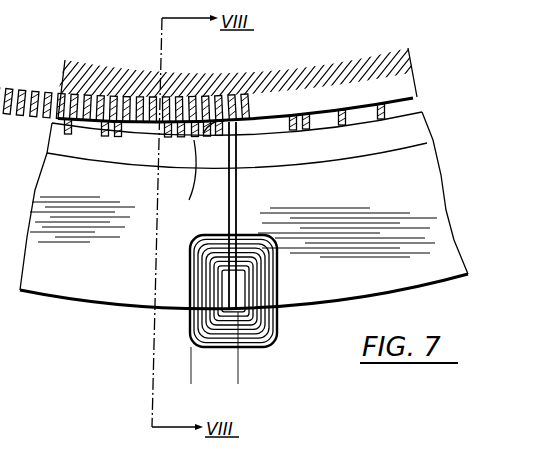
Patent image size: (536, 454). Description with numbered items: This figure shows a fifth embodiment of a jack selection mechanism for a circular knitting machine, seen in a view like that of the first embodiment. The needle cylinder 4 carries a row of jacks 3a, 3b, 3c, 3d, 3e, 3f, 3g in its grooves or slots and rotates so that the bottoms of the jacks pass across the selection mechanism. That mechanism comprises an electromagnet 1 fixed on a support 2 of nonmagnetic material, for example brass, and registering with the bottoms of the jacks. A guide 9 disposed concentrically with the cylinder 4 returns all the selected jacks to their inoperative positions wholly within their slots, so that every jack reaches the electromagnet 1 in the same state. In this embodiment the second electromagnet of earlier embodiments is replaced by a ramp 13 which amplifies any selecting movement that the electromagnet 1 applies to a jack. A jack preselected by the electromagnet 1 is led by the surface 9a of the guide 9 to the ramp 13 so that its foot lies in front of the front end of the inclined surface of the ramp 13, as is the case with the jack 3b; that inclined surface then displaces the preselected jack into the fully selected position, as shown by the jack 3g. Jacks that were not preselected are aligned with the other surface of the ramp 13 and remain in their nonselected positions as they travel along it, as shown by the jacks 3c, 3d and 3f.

The electromagnet 1 is at (280, 353).
The support 2 is at (244, 210).
The jack 3a is at (236, 118).
The jack 3b is at (216, 118).
The jack 3c is at (203, 118).
The jack 3d is at (188, 118).
The jack 3e is at (171, 137).
The jack 3f is at (153, 135).
The jack 3g is at (125, 134).
The needle cylinder 4 is at (344, 68).
The guide 9 is at (423, 127).
The surface of the guide 9a is at (220, 135).
The ramp 13 is at (191, 178).